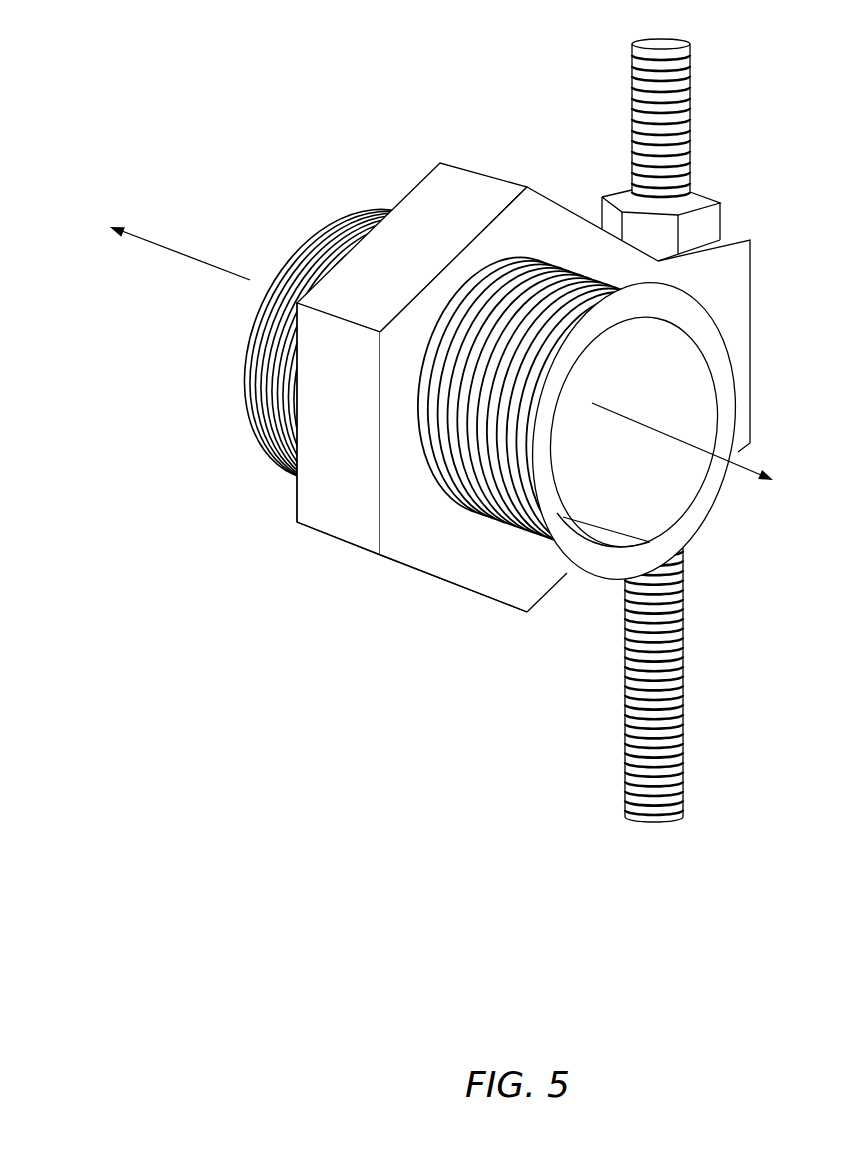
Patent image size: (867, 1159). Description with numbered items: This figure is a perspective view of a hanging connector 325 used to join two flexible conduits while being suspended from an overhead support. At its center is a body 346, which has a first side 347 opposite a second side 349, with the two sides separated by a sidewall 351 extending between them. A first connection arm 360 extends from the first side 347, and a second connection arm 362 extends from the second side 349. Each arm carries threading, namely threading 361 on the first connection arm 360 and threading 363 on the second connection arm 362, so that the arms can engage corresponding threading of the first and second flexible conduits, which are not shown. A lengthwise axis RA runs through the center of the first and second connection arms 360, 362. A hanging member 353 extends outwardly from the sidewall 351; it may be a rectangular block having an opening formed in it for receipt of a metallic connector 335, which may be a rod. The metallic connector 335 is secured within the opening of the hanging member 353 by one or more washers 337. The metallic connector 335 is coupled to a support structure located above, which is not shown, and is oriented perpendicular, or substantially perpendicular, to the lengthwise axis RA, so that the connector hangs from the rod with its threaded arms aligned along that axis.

The hanging connector 325 is at (466, 354).
The metallic connector 335 is at (680, 90).
The washer 337 is at (713, 220).
The body 346 is at (449, 390).
The first side 347 is at (297, 508).
The second side 349 is at (430, 553).
The sidewall 351 is at (332, 508).
The hanging member 353 is at (750, 288).
The first connection arm 360 is at (358, 355).
The threading 361 is at (310, 243).
The second connection arm 362 is at (584, 449).
The threading 363 is at (520, 540).
The lengthwise axis RA is at (747, 460).